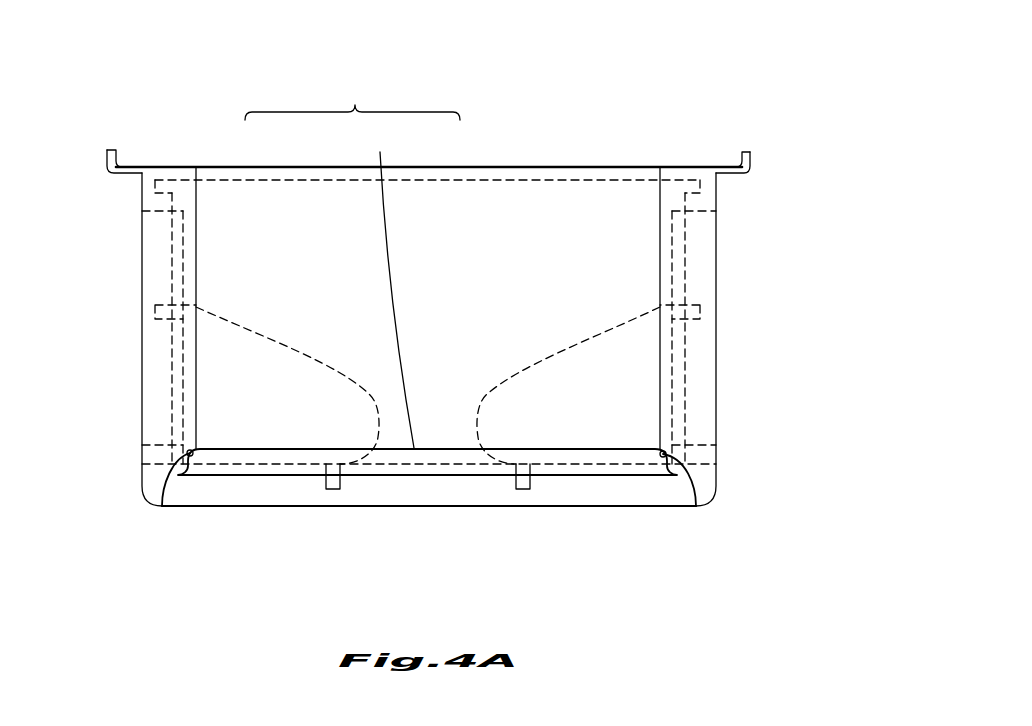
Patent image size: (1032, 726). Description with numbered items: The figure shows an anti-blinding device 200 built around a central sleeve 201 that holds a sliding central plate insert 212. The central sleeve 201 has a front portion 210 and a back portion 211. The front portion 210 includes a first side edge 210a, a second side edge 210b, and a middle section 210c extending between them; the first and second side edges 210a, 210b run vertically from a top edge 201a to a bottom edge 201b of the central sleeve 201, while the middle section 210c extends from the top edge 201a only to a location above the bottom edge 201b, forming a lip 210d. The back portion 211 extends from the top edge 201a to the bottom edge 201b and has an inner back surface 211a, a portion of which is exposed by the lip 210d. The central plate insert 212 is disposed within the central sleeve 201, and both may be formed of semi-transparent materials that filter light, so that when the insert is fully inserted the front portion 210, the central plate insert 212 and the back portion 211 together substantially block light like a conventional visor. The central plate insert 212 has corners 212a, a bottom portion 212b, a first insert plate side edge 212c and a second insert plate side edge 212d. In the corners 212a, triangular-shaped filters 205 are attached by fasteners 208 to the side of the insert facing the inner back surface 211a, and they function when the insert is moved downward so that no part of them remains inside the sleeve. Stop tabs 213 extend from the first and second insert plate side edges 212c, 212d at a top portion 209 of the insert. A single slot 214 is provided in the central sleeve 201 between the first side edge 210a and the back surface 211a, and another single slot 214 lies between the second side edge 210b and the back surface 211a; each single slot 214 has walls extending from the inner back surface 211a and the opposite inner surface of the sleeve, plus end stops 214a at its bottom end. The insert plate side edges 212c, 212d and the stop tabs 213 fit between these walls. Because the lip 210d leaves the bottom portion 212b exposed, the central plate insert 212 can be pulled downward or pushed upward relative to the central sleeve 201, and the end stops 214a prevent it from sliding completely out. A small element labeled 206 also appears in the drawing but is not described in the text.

The anti-blinding device 200 is at (762, 138).
The central sleeve 201 is at (717, 410).
The top edge 201a is at (203, 167).
The bottom edge 201b is at (678, 507).
The triangular-shaped filters 205 is at (307, 365).
The tab 206 is at (333, 490).
The fasteners 208 is at (190, 456).
The top portion 209 is at (712, 187).
The front portion 210 is at (355, 105).
The first side edge 210a is at (142, 237).
The second side edge 210b is at (717, 235).
The middle section 210c is at (318, 222).
The lip 210d is at (390, 288).
The back portion 211 is at (636, 497).
The inner back surface 211a is at (590, 493).
The central plate insert 212 is at (682, 272).
The corners 212a is at (178, 468).
The bottom portion 212b is at (471, 466).
The first insert plate side edge 212c is at (697, 333).
The second insert plate side edge 212d is at (170, 357).
The stop tabs 213 is at (703, 193).
The single slot 214 is at (152, 262).
The end stops 214a is at (152, 450).